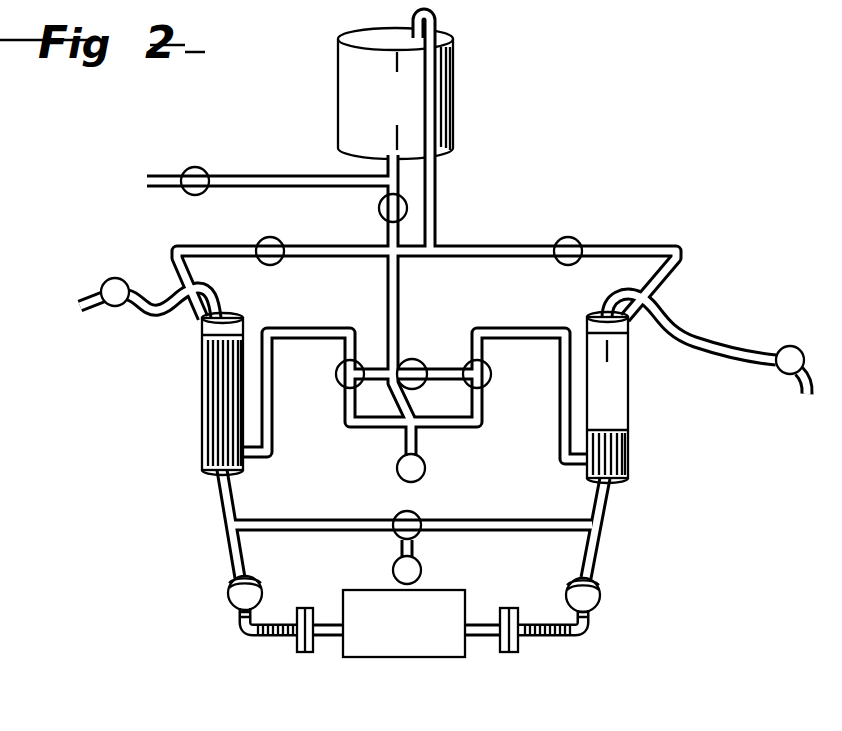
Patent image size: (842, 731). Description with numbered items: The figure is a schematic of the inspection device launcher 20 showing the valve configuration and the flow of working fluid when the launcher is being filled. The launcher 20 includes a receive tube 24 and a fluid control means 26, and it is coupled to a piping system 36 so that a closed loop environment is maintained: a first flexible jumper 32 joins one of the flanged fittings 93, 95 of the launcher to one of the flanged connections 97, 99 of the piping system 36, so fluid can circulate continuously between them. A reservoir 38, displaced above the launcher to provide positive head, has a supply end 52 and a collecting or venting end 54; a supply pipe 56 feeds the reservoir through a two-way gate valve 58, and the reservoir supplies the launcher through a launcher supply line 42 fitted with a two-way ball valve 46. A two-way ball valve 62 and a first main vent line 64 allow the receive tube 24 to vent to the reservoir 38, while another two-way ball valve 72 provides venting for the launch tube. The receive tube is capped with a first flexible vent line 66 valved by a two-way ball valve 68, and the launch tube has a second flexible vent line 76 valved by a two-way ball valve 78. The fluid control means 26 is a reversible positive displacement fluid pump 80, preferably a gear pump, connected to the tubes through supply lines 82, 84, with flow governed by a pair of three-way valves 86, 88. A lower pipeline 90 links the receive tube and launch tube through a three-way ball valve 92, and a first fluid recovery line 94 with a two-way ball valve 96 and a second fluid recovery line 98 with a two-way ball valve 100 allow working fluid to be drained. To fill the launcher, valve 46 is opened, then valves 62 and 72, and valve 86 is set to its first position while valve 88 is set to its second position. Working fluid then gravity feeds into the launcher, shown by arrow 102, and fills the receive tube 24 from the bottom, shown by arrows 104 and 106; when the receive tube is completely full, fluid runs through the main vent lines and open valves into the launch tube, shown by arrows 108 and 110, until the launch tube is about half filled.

The inspection device launcher 20 is at (665, 154).
The receive tube 24 is at (203, 376).
The fluid control means 26 is at (431, 361).
The first flexible jumper 32 is at (589, 634).
The piping system 36 is at (420, 659).
The reservoir 38 is at (355, 95).
The launcher supply line 42 is at (401, 266).
The 2-way ball valve 46 is at (379, 209).
The supply end 52 is at (435, 150).
The collecting or venting end 54 is at (352, 32).
The supply pipe 56 is at (235, 178).
The 2-way gate valve 58 is at (186, 170).
The 2-way ball valve 62 is at (285, 263).
The first main vent line 64 is at (209, 246).
The first flexible vent line 66 is at (139, 306).
The 2-way ball valve 68 is at (106, 281).
The 2-way ball valve 72 is at (573, 266).
The second flexible vent line 76 is at (752, 351).
The 2-way ball valve 78 is at (778, 369).
The fluid pump 80 is at (423, 383).
The supply line 82 is at (522, 332).
The supply line 84 is at (273, 389).
The 3-way valve 86 is at (341, 361).
The 3-way valve 88 is at (493, 366).
The lower pipeline 90 is at (373, 521).
The 3-way ball valve 92 is at (421, 516).
The flanged fitting 93 is at (230, 599).
The first fluid recovery line 94 is at (421, 567).
The flanged fitting 95 is at (601, 593).
The 2-way ball valve 96 is at (392, 573).
The flanged connection 97 is at (305, 651).
The second fluid recovery line 98 is at (420, 440).
The flanged connection 99 is at (518, 646).
The 2-way ball valve 100 is at (396, 469).
The arrow 102 is at (396, 340).
The arrow 104 is at (481, 410).
The arrow 106 is at (258, 462).
The arrow 108 is at (364, 241).
The arrow 110 is at (661, 268).